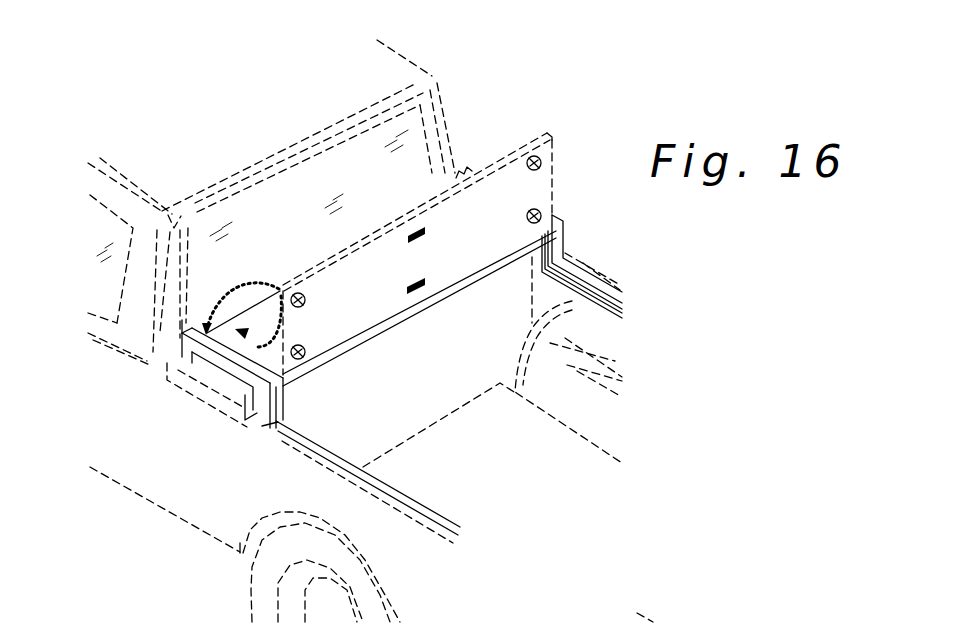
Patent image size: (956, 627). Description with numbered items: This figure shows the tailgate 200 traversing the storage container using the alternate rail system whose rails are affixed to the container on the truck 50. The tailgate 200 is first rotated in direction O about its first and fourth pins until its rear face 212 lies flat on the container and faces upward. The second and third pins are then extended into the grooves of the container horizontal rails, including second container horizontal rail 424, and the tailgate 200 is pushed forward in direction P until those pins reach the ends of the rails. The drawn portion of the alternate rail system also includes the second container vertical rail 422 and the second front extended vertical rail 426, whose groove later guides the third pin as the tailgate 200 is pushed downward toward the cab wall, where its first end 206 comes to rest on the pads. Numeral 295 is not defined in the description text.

The truck 50 is at (158, 540).
The tailgate 200 is at (572, 127).
The first end 206 is at (505, 156).
The rear face 212 is at (460, 230).
The pivot axis 295 is at (276, 289).
The second container vertical rail 422 is at (279, 430).
The second container horizontal rail 424 is at (232, 367).
The second front extended vertical rail 426 is at (182, 345).